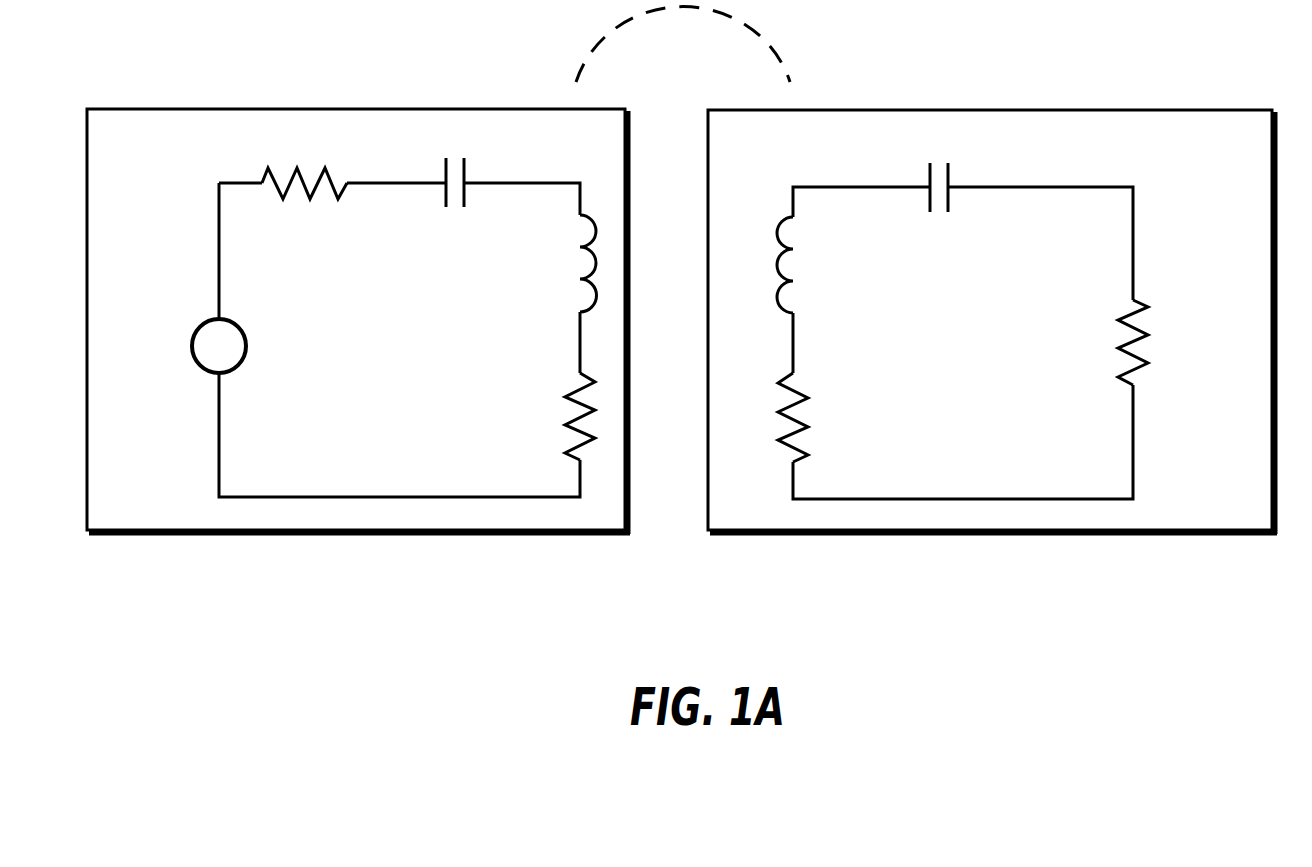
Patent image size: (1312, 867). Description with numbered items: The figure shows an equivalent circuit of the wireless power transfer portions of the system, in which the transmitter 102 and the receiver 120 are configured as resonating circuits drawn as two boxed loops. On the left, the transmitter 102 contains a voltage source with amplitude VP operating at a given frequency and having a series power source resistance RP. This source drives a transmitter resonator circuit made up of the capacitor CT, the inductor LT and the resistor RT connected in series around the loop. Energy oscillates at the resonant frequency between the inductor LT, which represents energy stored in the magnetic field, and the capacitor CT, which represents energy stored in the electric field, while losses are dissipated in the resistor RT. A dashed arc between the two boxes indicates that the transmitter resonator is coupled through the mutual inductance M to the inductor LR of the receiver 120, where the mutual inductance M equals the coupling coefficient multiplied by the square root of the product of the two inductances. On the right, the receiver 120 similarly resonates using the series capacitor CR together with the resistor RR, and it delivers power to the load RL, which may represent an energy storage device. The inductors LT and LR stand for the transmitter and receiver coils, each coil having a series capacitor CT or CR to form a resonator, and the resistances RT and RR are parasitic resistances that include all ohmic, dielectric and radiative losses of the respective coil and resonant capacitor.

The transmitter 102 is at (162, 148).
The receiver 120 is at (1215, 153).
The mutual inductance M is at (683, 44).
The voltage source amplitude VP is at (198, 346).
The power source resistance RP is at (304, 161).
The transmitter capacitor CT is at (453, 165).
The transmitter inductor LT is at (564, 263).
The transmitter resistor RT is at (557, 416).
The receiver capacitor CR is at (937, 169).
The receiver inductor LR is at (808, 265).
The receiver resistor RR is at (811, 417).
The load resistance RL is at (1154, 342).